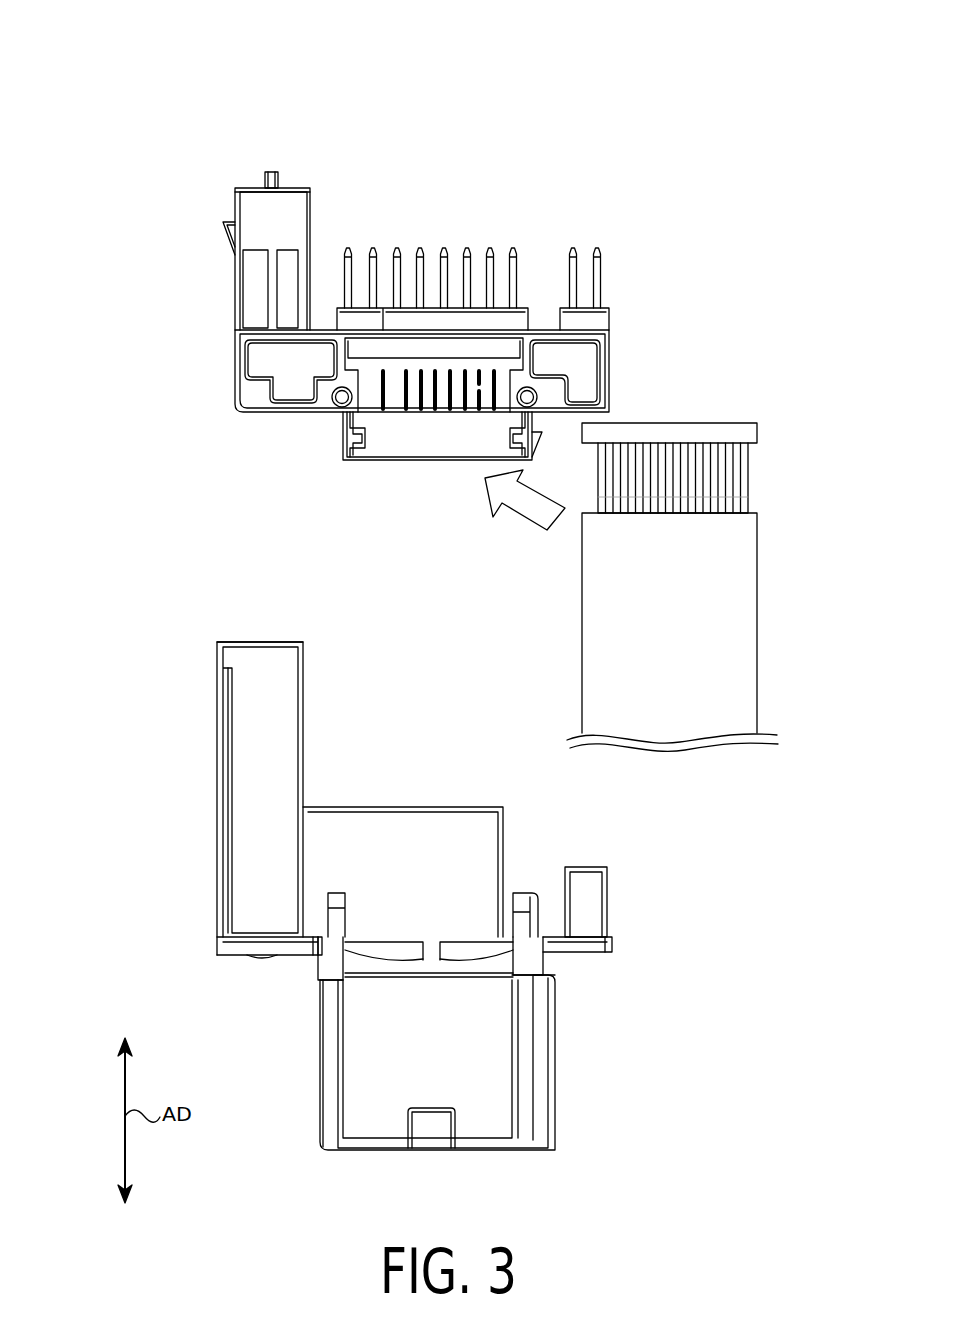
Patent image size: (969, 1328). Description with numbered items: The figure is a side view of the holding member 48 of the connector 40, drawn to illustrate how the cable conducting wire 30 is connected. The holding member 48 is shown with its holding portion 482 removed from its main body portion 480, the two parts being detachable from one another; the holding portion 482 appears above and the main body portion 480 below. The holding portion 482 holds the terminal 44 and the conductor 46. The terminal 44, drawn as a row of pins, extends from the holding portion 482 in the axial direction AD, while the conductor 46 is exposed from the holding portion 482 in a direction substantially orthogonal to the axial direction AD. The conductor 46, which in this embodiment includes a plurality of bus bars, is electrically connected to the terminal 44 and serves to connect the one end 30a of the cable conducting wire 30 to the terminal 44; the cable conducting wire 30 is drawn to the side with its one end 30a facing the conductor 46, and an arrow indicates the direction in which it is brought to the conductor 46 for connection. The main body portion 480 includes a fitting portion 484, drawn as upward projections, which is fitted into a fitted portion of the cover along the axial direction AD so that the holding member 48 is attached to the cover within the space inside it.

The connector 40 is at (230, 120).
The terminal 44 is at (397, 248).
The conductor 46 is at (435, 413).
The holding member 48 is at (112, 477).
The holding portion 482 is at (243, 398).
The main body portion 480 is at (243, 663).
The fitting portion 484 is at (525, 893).
The cable conducting wire 30 is at (722, 613).
The one end of the cable conducting wire 30a is at (685, 457).